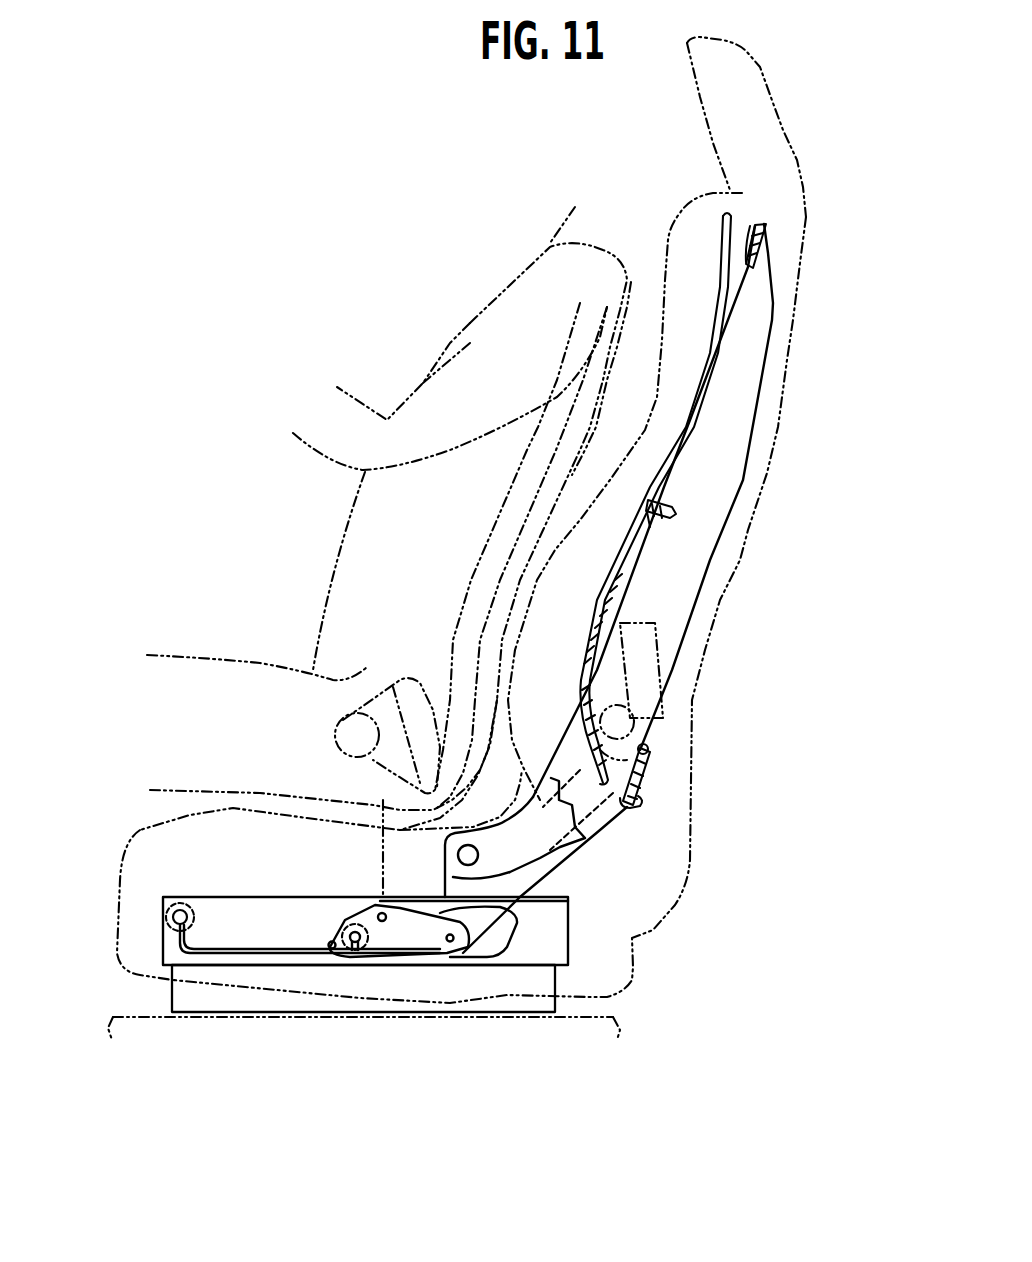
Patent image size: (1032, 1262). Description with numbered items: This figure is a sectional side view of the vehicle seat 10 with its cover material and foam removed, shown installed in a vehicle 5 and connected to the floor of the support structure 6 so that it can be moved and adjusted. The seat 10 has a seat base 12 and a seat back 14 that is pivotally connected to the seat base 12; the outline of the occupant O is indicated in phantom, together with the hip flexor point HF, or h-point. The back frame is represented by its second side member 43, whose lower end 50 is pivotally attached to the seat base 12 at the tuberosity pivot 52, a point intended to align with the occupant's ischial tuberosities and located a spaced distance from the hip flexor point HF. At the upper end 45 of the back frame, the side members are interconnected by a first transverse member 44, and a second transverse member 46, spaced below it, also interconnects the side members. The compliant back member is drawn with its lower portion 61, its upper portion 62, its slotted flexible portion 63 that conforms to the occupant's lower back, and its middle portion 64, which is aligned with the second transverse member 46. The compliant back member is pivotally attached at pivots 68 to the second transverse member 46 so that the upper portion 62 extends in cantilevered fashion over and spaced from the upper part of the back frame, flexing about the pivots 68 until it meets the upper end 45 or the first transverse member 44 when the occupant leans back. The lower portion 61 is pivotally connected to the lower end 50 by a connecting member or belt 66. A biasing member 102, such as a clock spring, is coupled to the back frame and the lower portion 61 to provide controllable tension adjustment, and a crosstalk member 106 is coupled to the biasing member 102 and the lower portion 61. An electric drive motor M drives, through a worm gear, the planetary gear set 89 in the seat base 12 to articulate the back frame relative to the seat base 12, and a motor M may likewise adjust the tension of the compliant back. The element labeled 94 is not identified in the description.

The vehicle 5 is at (617, 1012).
The support structure 6 is at (135, 1015).
The vehicle seat 10 is at (808, 594).
The seat base 12 is at (592, 964).
The seat back 14 is at (825, 283).
The second side member 43 is at (723, 460).
The first transverse member 44 is at (748, 236).
The upper end 45 is at (776, 253).
The second transverse member 46 is at (672, 506).
The lower end 50 is at (424, 889).
The tuberosity pivot 52 is at (393, 917).
The lower portion 61 is at (575, 756).
The upper portion 62 is at (712, 232).
The slotted, flexible portion 63 is at (572, 677).
The middle portion 64 is at (618, 543).
The connecting member or belt 66 is at (653, 760).
The pivots 68 is at (650, 530).
The planetary gear set 89 is at (360, 914).
The link 94 is at (420, 940).
The biasing member 102 is at (647, 750).
The crosstalk member 106 is at (642, 802).
The occupant O is at (497, 292).
The electric drive motor M is at (643, 668).
The hip flexor point HF is at (357, 735).